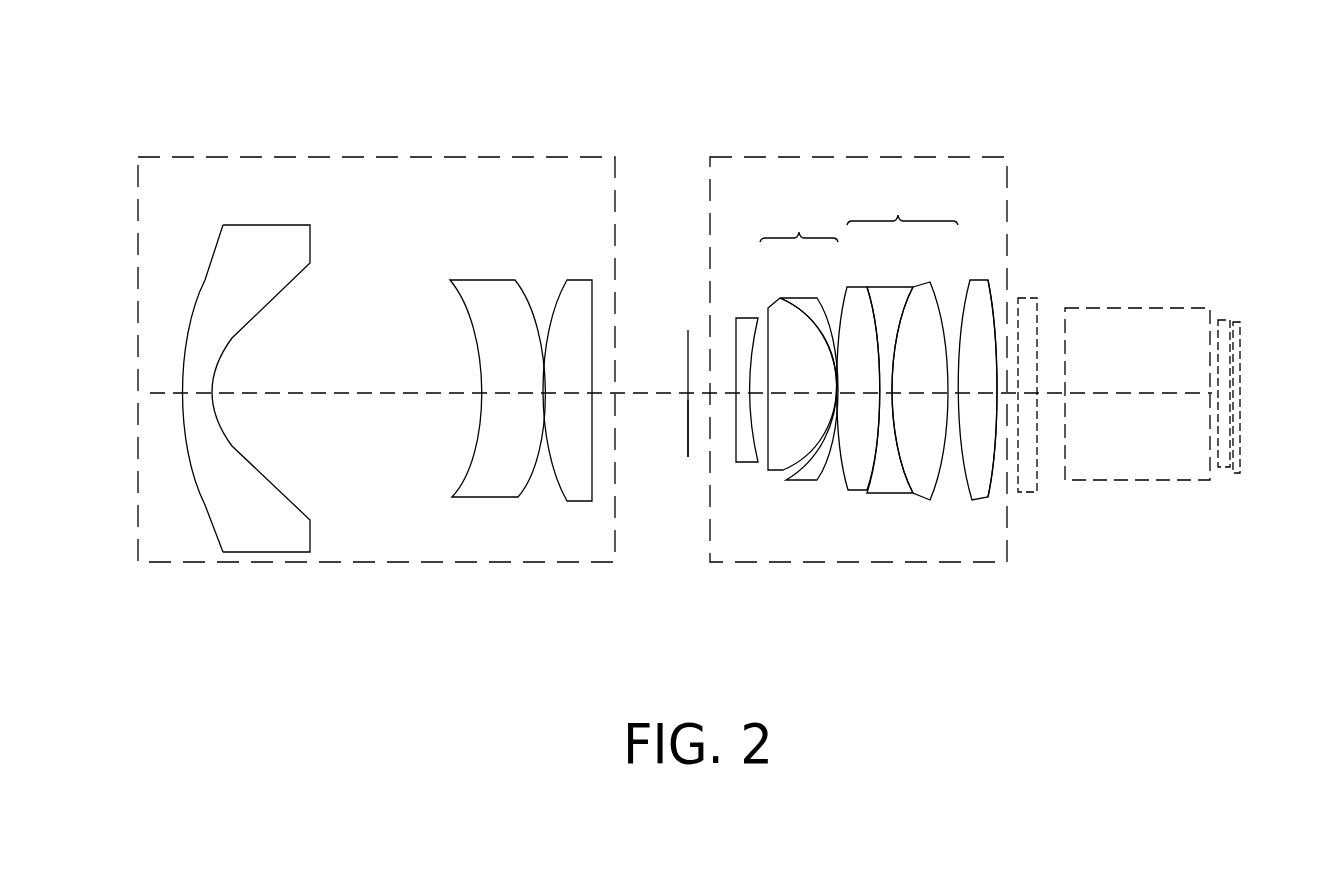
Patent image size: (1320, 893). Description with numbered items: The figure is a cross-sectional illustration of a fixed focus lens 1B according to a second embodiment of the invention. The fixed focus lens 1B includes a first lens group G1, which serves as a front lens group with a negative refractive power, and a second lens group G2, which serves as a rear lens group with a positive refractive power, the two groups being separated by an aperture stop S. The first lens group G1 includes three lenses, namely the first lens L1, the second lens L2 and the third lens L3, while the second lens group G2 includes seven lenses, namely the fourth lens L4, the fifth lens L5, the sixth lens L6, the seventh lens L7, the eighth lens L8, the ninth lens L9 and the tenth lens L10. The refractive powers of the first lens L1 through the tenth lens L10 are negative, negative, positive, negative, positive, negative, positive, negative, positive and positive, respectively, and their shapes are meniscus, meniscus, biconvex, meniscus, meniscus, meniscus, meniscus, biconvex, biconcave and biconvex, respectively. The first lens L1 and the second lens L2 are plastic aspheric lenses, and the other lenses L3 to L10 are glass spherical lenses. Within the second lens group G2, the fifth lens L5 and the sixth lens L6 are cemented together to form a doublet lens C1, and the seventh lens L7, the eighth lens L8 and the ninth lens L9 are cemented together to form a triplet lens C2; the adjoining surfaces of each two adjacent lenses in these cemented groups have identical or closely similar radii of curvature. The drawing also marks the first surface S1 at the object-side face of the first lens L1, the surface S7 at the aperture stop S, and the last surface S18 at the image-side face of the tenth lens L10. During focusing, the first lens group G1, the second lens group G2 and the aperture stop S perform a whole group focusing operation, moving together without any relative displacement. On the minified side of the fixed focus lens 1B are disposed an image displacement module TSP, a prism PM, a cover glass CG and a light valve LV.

The fixed focus lens 1B is at (255, 70).
The first lens group G1 is at (390, 157).
The second lens group G2 is at (803, 157).
The first lens L1 is at (270, 226).
The second lens L2 is at (451, 280).
The third lens L3 is at (567, 280).
The fourth lens L4 is at (739, 318).
The fifth lens L5 is at (769, 306).
The sixth lens L6 is at (800, 298).
The seventh lens L7 is at (850, 287).
The eighth lens L8 is at (882, 287).
The ninth lens L9 is at (915, 286).
The tenth lens L10 is at (972, 283).
The doublet lens C1 is at (799, 336).
The triplet lens C2 is at (897, 338).
The aperture stop S is at (688, 330).
The first surface S1 is at (203, 487).
The seventh surface (stop) S7 is at (688, 457).
The eighteenth surface S18 is at (986, 498).
The image displacement module TSP is at (1028, 298).
The prism PM is at (1105, 308).
The cover glass CG is at (1219, 320).
The light valve LV is at (1238, 322).